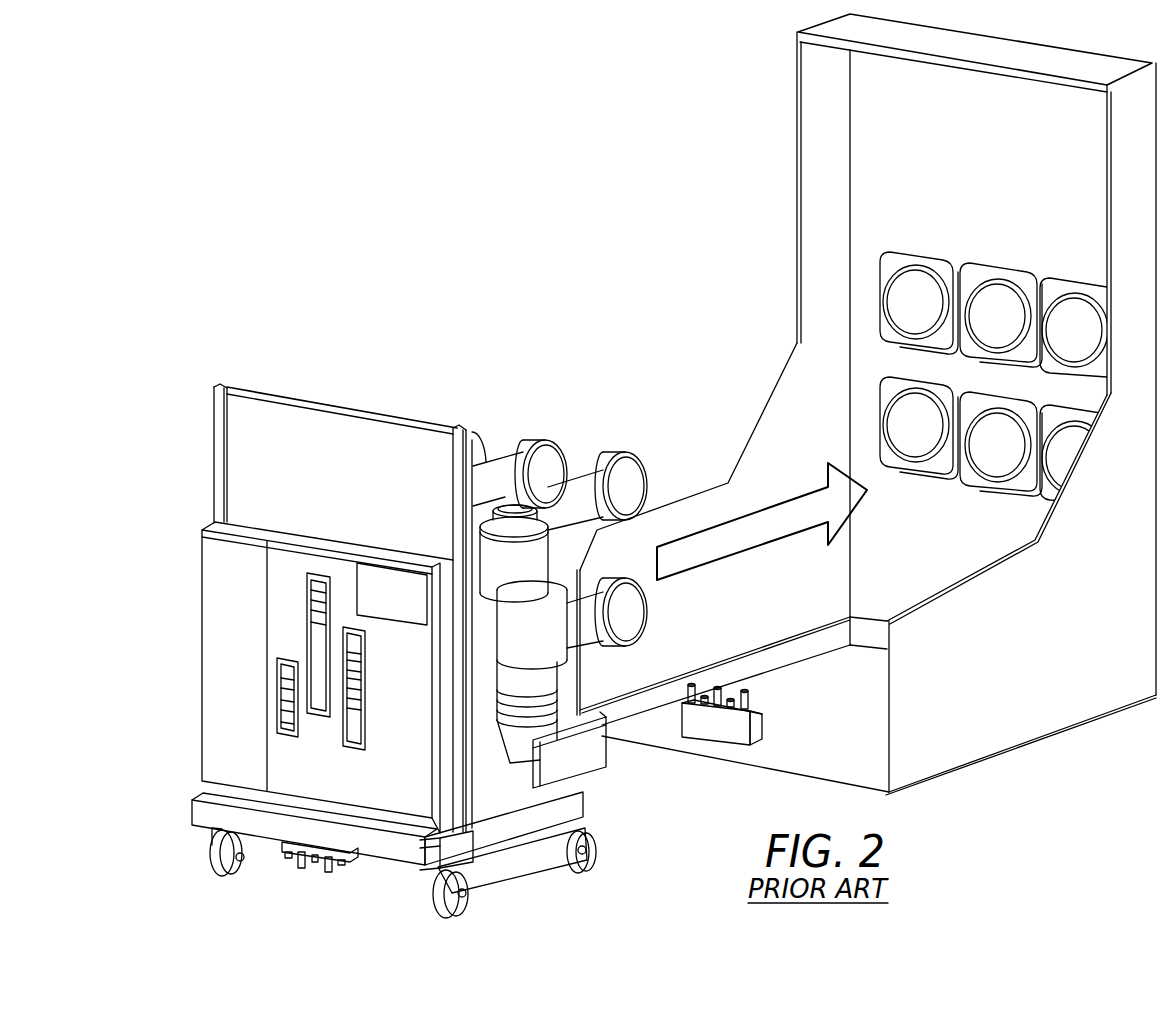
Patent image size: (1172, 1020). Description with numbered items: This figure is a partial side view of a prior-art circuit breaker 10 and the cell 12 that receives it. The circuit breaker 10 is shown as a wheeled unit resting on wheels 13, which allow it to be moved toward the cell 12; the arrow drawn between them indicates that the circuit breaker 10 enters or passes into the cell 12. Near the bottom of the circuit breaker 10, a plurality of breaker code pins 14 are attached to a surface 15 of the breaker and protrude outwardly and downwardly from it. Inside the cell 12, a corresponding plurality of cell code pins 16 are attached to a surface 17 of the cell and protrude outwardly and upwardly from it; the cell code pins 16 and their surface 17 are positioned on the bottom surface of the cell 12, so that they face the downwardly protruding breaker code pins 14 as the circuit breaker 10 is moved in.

The circuit breaker 10 is at (340, 443).
The cell 12 is at (880, 147).
The wheels 13 is at (214, 858).
The breaker code pins 14 is at (345, 872).
The surface of the circuit breaker 15 is at (285, 843).
The cell code pins 16 is at (749, 681).
The surface of the cell 17 is at (735, 731).